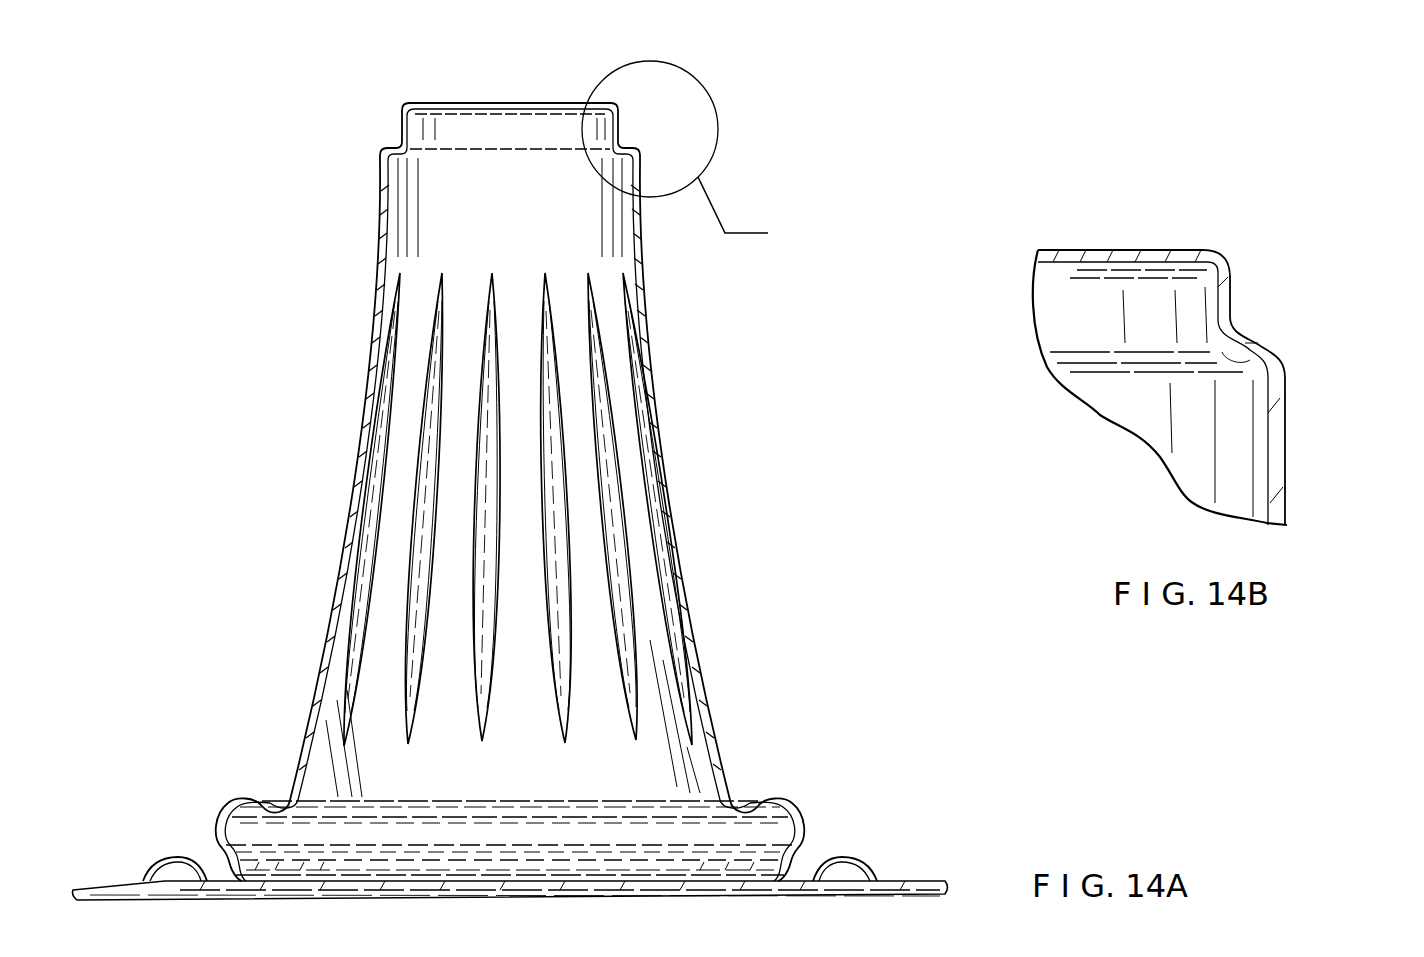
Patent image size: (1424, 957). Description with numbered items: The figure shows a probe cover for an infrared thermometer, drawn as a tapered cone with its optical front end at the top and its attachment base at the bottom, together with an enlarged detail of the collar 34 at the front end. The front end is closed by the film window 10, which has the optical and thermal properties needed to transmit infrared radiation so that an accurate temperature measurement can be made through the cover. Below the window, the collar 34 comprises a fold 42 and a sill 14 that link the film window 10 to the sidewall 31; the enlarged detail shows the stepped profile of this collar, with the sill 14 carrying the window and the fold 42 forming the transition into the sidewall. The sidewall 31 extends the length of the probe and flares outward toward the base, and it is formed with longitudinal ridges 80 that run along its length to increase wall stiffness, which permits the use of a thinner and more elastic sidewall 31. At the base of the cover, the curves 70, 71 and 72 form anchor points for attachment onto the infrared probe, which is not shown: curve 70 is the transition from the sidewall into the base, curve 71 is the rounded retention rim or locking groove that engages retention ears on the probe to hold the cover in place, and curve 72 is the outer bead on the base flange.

In FIG. 14A, the film window 10 is at (535, 103).
In FIG. 14A, the sill 14 is at (405, 107).
In FIG. 14B, the sill 14 is at (1232, 257).
In FIG. 14A, the sidewall 31 is at (655, 395).
In FIG. 14A, the collar 34 is at (652, 90).
In FIG. 14B, the collar 34 is at (1276, 322).
In FIG. 14B, the fold 42 is at (1228, 350).
In FIG. 14A, the curve 70 is at (744, 806).
In FIG. 14A, the curve 71 is at (808, 817).
In FIG. 14A, the curve 72 is at (856, 853).
In FIG. 14A, the longitudinal ridges 80 is at (432, 437).